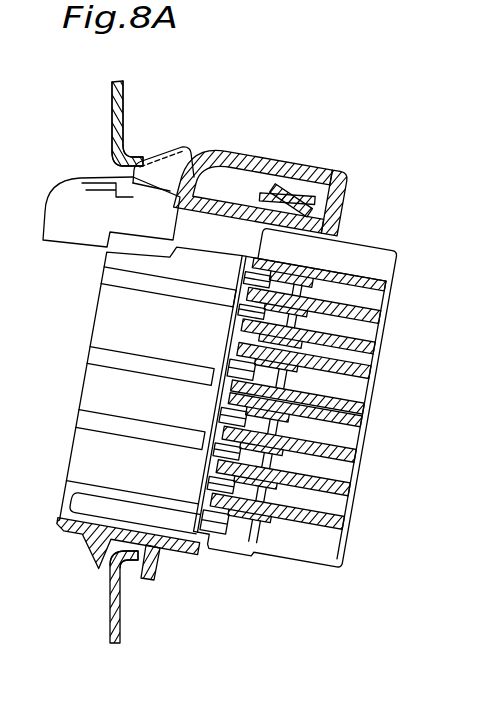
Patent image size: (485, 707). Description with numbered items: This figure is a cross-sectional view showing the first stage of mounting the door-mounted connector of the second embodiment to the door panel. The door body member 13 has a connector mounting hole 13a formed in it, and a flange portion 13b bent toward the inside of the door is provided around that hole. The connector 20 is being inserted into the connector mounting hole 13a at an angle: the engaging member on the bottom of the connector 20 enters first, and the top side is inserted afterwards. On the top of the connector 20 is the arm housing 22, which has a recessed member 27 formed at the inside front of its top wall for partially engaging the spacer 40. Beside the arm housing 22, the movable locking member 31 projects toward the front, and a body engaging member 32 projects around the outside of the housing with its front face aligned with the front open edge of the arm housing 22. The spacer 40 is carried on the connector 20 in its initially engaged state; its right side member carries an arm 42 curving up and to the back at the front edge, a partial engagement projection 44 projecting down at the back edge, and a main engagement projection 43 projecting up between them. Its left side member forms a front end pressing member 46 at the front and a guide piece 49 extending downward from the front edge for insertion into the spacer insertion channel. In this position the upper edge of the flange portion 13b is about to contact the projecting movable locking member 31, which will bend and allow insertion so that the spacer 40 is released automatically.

The door body member 13 is at (122, 138).
The connector mounting hole 13a is at (113, 158).
The flange portion 13b is at (134, 157).
The connector 20 is at (366, 238).
The arm housing 22 is at (342, 175).
The recessed member 27 is at (258, 156).
The movable locking member 31 is at (173, 175).
The body engaging member 32 is at (158, 563).
The spacer 40 is at (58, 247).
The arm 42 is at (226, 168).
The main engagement projection 43 is at (283, 196).
The partial engagement projection 44 is at (313, 200).
The front end pressing member 46 is at (107, 178).
The guide piece 49 is at (62, 220).